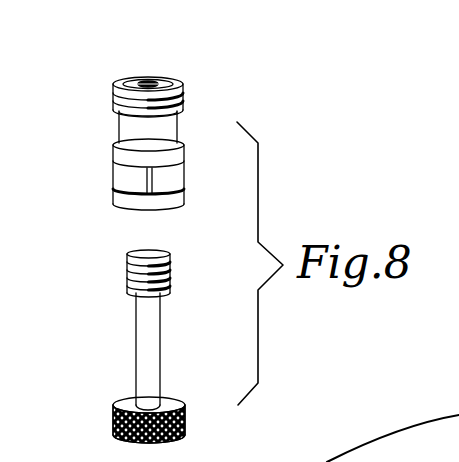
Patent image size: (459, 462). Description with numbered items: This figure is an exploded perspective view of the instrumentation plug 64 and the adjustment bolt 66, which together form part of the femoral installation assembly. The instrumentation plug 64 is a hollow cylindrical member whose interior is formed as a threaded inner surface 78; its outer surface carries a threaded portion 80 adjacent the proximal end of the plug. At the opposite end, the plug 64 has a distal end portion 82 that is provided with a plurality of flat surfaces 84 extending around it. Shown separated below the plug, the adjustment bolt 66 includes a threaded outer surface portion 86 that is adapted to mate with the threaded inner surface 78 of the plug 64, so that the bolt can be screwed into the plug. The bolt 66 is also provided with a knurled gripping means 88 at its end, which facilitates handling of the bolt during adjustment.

The threaded inner surface 78 is at (152, 80).
The threaded portion 80 is at (185, 100).
The instrumentation plug 64 is at (124, 133).
The flat surfaces 84 is at (128, 180).
The distal end portion 82 is at (172, 202).
The threaded outer surface portion 86 is at (128, 276).
The adjustment bolt 66 is at (138, 338).
The knurled gripping means 88 is at (116, 430).